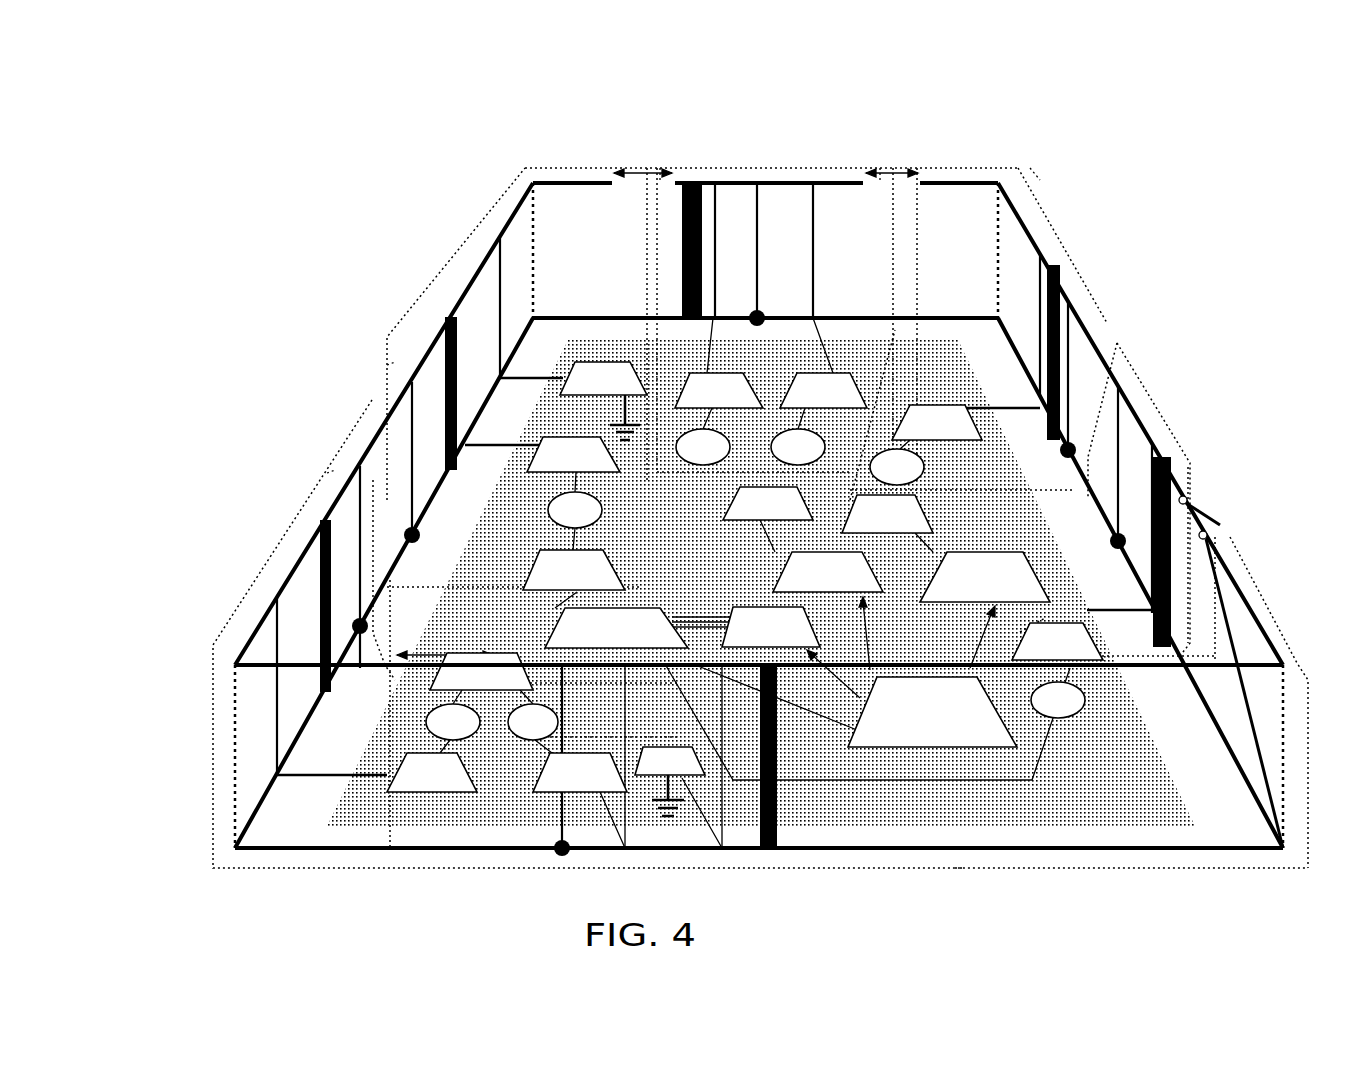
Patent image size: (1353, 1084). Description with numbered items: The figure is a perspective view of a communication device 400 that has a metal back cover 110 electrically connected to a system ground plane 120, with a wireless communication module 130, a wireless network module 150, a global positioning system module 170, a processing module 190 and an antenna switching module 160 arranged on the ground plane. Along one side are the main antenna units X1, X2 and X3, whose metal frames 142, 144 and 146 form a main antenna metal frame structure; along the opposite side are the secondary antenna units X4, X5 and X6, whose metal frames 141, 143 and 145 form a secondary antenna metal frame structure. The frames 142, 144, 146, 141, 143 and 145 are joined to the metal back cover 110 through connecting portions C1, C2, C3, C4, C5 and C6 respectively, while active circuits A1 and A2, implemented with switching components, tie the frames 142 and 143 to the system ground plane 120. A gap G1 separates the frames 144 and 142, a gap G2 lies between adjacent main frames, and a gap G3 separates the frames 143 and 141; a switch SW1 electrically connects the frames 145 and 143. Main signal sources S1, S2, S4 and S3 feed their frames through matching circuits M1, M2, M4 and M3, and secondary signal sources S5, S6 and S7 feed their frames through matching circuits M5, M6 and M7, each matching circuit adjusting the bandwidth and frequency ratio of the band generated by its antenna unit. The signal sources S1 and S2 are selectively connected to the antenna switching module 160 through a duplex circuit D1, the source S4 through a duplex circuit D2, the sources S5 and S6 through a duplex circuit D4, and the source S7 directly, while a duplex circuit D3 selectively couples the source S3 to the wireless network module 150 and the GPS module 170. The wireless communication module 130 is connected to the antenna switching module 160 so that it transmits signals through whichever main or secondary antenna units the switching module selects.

The communication device 400 is at (87, 109).
The metal back cover 110 is at (330, 850).
The system ground plane 120 is at (405, 797).
The wireless communication module 130 is at (754, 637).
The metal frame 141 is at (254, 577).
The metal frame 142 is at (468, 247).
The metal frame 143 is at (1205, 690).
The metal frame 144 is at (737, 155).
The metal frame 145 is at (1163, 410).
The metal frame 146 is at (1102, 283).
The wireless network module 150 is at (812, 582).
The antenna switching module 160 is at (601, 640).
The global positioning system module 170 is at (969, 587).
The processing module 190 is at (916, 722).
The connecting portion C1 is at (435, 345).
The connecting portion C2 is at (695, 187).
The connecting portion C3 is at (1057, 273).
The connecting portion C4 is at (320, 550).
The connecting portion C5 is at (782, 840).
The connecting portion C6 is at (1175, 475).
The antenna unit X1 is at (387, 363).
The antenna unit X2 is at (775, 168).
The antenna unit X3 is at (1040, 168).
The antenna unit X4 is at (327, 473).
The antenna unit X5 is at (960, 868).
The antenna unit X6 is at (1128, 357).
The gap G1 is at (643, 156).
The gap G2 is at (892, 156).
The gap G3 is at (445, 637).
The switch SW1 is at (1233, 495).
The active circuit A1 is at (588, 388).
The active circuit A2 is at (655, 772).
The matching circuit M1 is at (558, 465).
The matching circuit M2 is at (702, 400).
The matching circuit M3 is at (922, 432).
The matching circuit M4 is at (807, 400).
The matching circuit M5 is at (417, 782).
The matching circuit M6 is at (565, 782).
The matching circuit M7 is at (1042, 652).
The duplex circuit D1 is at (560, 580).
The duplex circuit D2 is at (755, 513).
The duplex circuit D3 is at (875, 525).
The duplex circuit D4 is at (467, 682).
The signal source S1 is at (563, 520).
The signal source S2 is at (691, 457).
The signal source S3 is at (885, 477).
The signal source S4 is at (786, 457).
The signal source S5 is at (441, 732).
The signal source S6 is at (521, 732).
The signal source S7 is at (1046, 710).